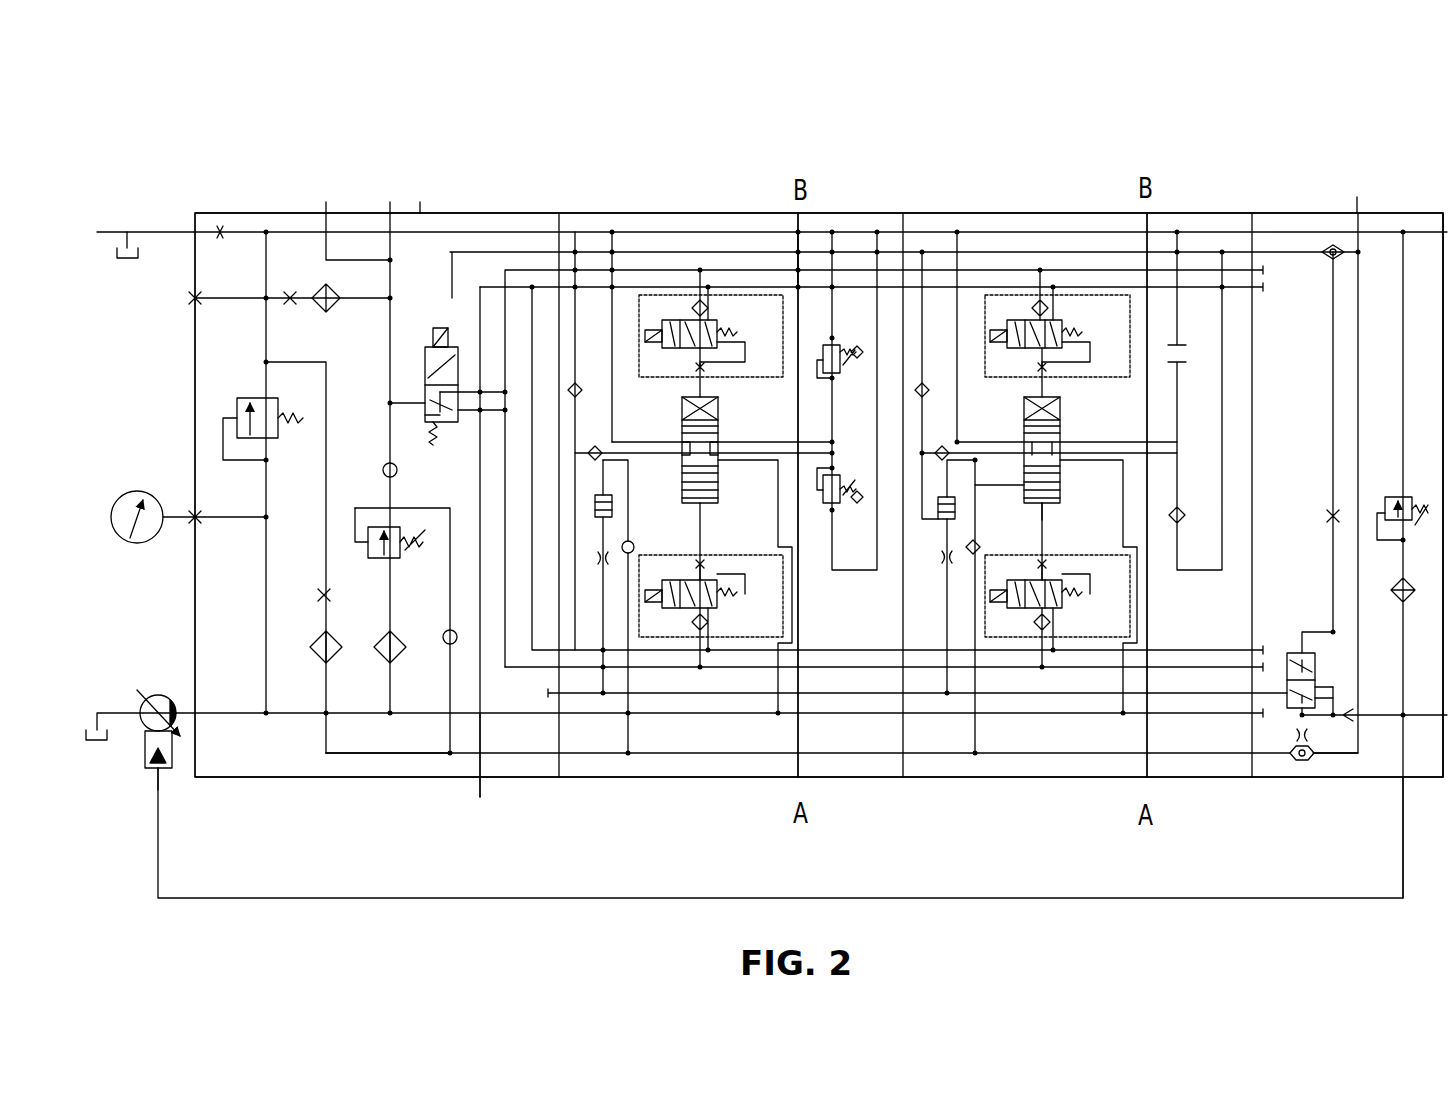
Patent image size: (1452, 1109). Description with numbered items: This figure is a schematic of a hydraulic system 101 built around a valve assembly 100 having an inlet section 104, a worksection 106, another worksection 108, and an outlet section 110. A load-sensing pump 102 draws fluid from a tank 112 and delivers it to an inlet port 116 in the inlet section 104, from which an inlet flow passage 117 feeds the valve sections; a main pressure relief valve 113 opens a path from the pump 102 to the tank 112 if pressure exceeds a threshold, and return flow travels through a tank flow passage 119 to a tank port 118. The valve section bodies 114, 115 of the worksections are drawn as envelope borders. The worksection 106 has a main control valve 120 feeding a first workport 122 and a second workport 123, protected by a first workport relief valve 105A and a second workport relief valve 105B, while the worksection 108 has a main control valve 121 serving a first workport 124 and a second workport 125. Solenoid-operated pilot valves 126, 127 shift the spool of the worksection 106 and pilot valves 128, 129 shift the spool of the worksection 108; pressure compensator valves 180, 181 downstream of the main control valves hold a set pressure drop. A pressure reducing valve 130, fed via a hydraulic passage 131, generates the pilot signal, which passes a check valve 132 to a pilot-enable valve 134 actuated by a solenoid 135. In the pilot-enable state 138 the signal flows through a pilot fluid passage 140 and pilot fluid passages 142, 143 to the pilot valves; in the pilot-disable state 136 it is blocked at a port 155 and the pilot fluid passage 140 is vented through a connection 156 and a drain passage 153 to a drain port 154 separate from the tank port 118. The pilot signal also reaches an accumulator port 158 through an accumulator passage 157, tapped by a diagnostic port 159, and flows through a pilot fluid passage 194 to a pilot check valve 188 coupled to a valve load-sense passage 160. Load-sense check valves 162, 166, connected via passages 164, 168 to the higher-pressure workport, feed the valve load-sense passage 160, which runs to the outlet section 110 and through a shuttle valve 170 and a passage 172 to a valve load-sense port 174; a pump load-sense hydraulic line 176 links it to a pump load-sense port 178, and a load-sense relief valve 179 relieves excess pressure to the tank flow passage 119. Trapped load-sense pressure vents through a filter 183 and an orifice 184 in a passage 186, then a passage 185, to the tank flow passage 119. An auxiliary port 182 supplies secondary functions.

The valve assembly 100 is at (480, 212).
The hydraulic system 101 is at (222, 130).
The pump 102 is at (140, 723).
The inlet section 104 is at (365, 170).
The first workport relief valve 105A is at (840, 515).
The second workport relief valve 105B is at (852, 378).
The worksection 106 is at (720, 193).
The worksection 108 is at (1100, 197).
The outlet section 110 is at (1332, 197).
The tank 112 is at (158, 543).
The main pressure relief valve 113 is at (233, 410).
The valve section body 114 is at (625, 213).
The valve section body 115 is at (990, 213).
The inlet port 116 is at (192, 710).
The inlet flow passage 117 is at (213, 717).
The tank port 118 is at (190, 228).
The tank flow passage 119 is at (577, 228).
The main control valve 120 is at (720, 430).
The main control valve 121 is at (1067, 430).
The first workport 122 is at (802, 787).
The second workport 123 is at (803, 210).
The first workport 124 is at (1147, 790).
The second workport 125 is at (1147, 210).
The pilot valve 126 is at (672, 637).
The pilot valve 127 is at (663, 297).
The pilot valve 128 is at (1017, 637).
The pilot valve 129 is at (1008, 310).
The pressure reducing valve 130 is at (380, 558).
The hydraulic passage 131 is at (390, 683).
The check valve 132 is at (388, 466).
The pilot-enable valve 134 is at (463, 440).
The solenoid 135 is at (440, 327).
The pilot-disable state 136 is at (423, 410).
The pilot-enable state 138 is at (423, 352).
The pilot fluid passage 140 is at (727, 270).
The pilot fluid passage 142 is at (697, 667).
The pilot fluid passage 143 is at (697, 295).
The drain passage 153 is at (503, 213).
The drain port 154 is at (477, 800).
The port 155 is at (420, 397).
The connection 156 is at (458, 405).
The accumulator passage 157 is at (390, 268).
The accumulator port 158 is at (390, 208).
The diagnostic port 159 is at (326, 208).
The valve load-sense passage 160 is at (872, 753).
The load-sense check valve 162 is at (634, 547).
The passages 164 is at (630, 498).
The load-sense check valve 166 is at (980, 485).
The passages 168 is at (1005, 530).
The shuttle valve 170 is at (1300, 757).
The passage 172 is at (1340, 716).
The valve load-sense port 174 is at (1402, 780).
The pump load-sense hydraulic line 176 is at (1150, 897).
The pump load-sense port 178 is at (165, 778).
The load-sense relief valve 179 is at (1400, 497).
The pressure compensator valve 180 is at (595, 515).
The pressure compensator valve 181 is at (943, 533).
The auxiliary port 182 is at (190, 497).
The filter 183 is at (317, 635).
The orifice 184 is at (323, 595).
The passage 185 is at (320, 530).
The passage 186 is at (327, 683).
The pilot check valve 188 is at (600, 517).
The pilot fluid passage 194 is at (447, 530).